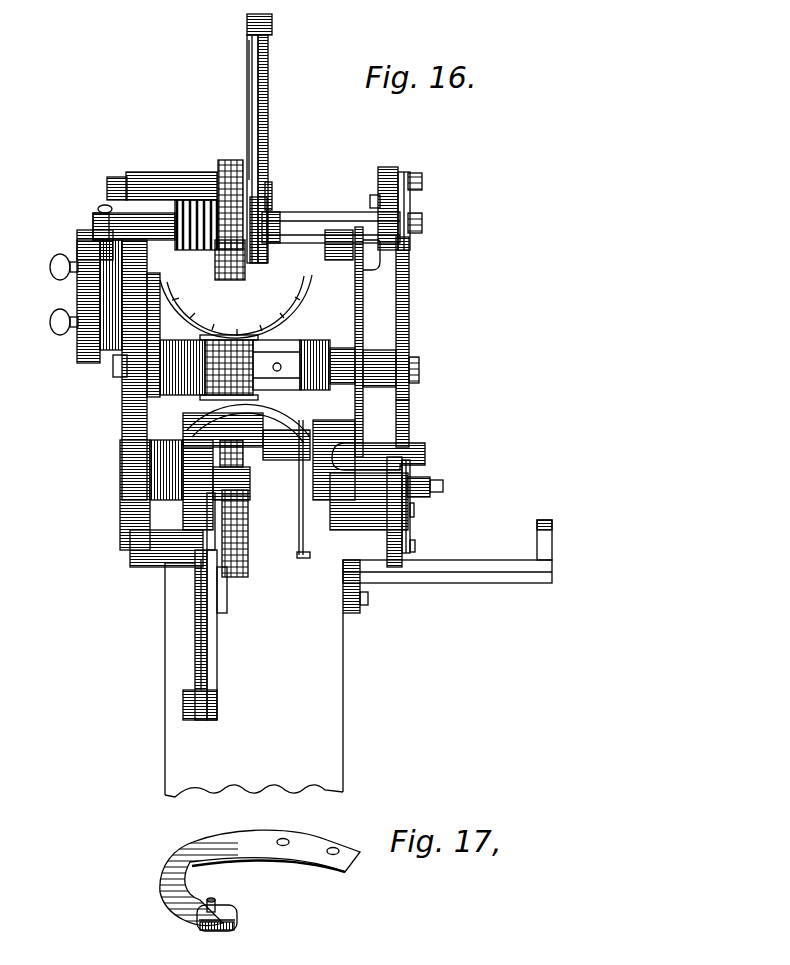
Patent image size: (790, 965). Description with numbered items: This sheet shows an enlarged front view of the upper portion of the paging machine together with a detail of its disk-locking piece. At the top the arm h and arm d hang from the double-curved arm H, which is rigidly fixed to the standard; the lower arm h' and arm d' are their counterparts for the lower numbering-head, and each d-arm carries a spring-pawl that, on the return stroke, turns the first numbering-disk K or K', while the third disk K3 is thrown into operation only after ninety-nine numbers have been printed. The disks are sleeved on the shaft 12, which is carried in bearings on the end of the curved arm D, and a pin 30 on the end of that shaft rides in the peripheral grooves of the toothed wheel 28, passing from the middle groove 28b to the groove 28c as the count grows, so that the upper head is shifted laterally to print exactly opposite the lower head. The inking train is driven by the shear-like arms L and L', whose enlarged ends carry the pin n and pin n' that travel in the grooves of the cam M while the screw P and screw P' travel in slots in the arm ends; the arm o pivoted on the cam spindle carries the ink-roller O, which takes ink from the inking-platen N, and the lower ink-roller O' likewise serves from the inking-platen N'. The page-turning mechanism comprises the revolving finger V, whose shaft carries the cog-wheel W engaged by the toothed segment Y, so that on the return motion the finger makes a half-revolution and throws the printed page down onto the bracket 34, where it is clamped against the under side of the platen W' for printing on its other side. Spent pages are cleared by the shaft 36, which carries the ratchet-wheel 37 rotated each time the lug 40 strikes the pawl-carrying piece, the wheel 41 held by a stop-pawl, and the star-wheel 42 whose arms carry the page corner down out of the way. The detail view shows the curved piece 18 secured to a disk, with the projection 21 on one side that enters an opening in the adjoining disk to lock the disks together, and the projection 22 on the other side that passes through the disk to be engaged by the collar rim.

In FIG. 16, the arm h is at (267, 138).
In FIG. 16, the arm d is at (231, 110).
In FIG. 16, the third numbering-disk K3 is at (228, 158).
In FIG. 16, the first numbering-disk K is at (278, 204).
In FIG. 16, the double-curved arm H is at (176, 170).
In FIG. 16, the pin 30 is at (99, 207).
In FIG. 16, the curved arm or bracket D is at (142, 226).
In FIG. 16, the shaft 12 is at (95, 225).
In FIG. 16, the groove 28c is at (100, 250).
In FIG. 16, the groove 28b is at (100, 297).
In FIG. 16, the toothed wheel 28 is at (65, 345).
In FIG. 16, the cog-wheel W is at (104, 323).
In FIG. 16, the toothed segment Y is at (147, 370).
In FIG. 16, the bracket or arm 34 is at (122, 470).
In FIG. 16, the ink-roller O is at (236, 299).
In FIG. 16, the arm o is at (263, 268).
In FIG. 16, the inking-platen N is at (331, 220).
In FIG. 16, the cam M is at (382, 168).
In FIG. 16, the pin n is at (422, 183).
In FIG. 16, the screw P is at (422, 224).
In FIG. 16, the arm L is at (414, 318).
In FIG. 16, the arm L' is at (419, 423).
In FIG. 16, the revolving finger V is at (303, 350).
In FIG. 16, the printing platen or table W' is at (209, 367).
In FIG. 16, the ink-roller O' is at (244, 460).
In FIG. 16, the inking-platen N' is at (245, 509).
In FIG. 16, the first numbering-disk K' is at (238, 551).
In FIG. 16, the ratchet-wheel 37 is at (408, 487).
In FIG. 16, the shaft 36 is at (445, 487).
In FIG. 16, the projection or lug 40 is at (405, 522).
In FIG. 16, the screw P' is at (426, 506).
In FIG. 16, the pin n' is at (427, 552).
In FIG. 16, the star-wheel (ratchet-wheel) 41 is at (306, 548).
In FIG. 16, the star-wheel 42 is at (304, 549).
In FIG. 16, the arm h' is at (213, 635).
In FIG. 16, the arm d' is at (185, 625).
In FIG. 17, the curved piece of metal 18 is at (259, 881).
In FIG. 17, the projection 21 is at (218, 903).
In FIG. 17, the projection 22 is at (213, 932).